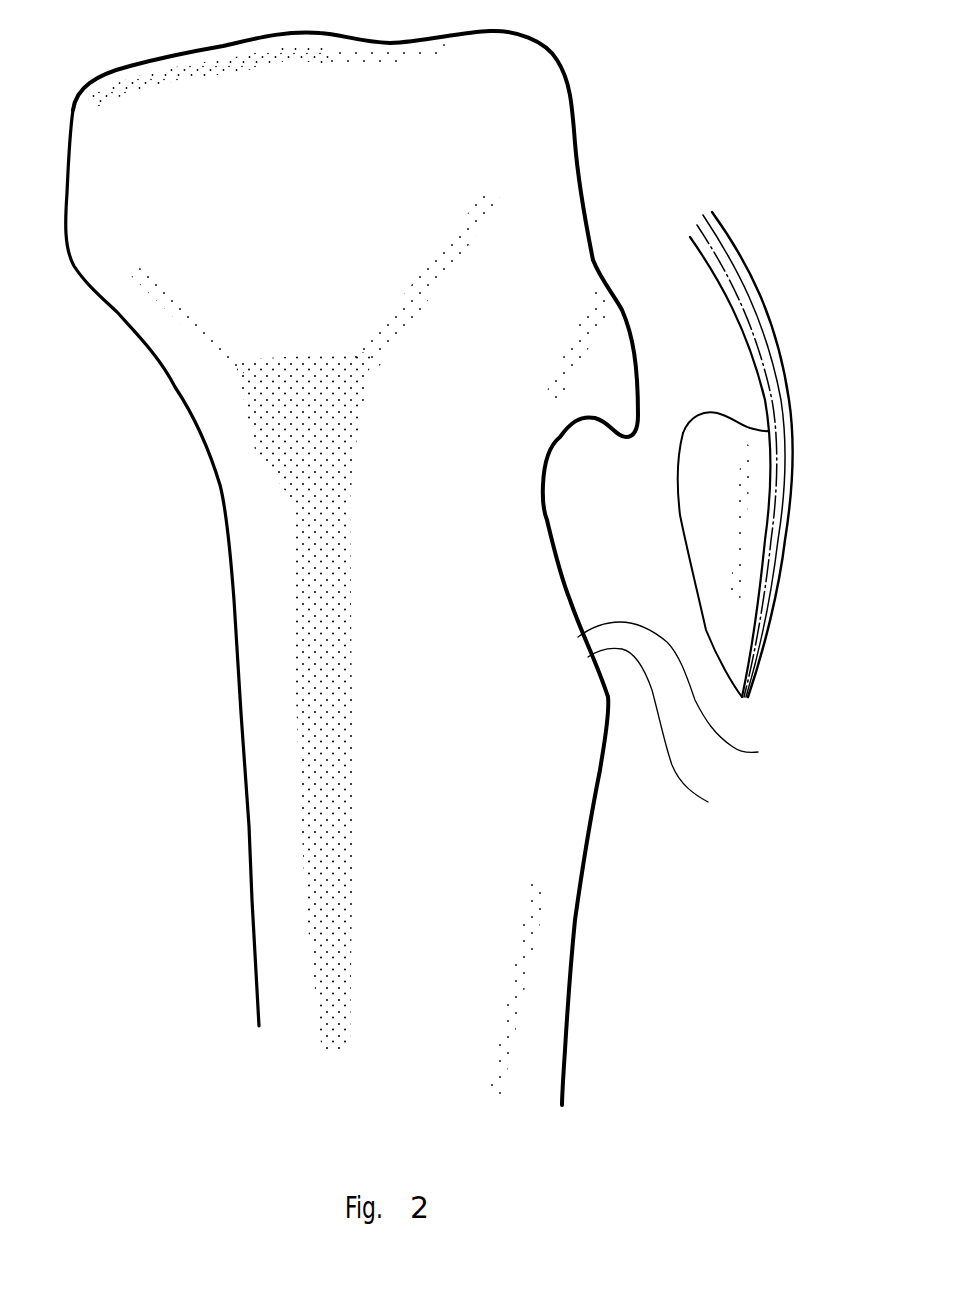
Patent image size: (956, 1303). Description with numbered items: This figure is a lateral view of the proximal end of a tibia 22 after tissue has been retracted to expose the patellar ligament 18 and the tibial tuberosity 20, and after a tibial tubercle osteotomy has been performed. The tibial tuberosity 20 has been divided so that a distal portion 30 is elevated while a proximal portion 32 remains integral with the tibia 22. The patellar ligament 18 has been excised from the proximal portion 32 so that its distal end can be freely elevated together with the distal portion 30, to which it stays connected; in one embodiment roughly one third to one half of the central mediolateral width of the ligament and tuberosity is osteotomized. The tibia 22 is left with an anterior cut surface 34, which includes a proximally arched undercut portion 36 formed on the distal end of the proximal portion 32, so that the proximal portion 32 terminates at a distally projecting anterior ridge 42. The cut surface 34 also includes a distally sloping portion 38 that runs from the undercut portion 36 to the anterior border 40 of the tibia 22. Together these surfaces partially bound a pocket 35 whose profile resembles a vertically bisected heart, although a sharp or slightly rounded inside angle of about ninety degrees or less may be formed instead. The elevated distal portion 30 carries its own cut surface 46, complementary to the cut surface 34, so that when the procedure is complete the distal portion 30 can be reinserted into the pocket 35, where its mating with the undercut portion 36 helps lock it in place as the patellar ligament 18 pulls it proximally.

The patellar ligament 18 is at (779, 357).
The tibial tuberosity 20 is at (728, 341).
The tibia 22 is at (530, 898).
The distal portion 30 is at (727, 423).
The proximal portion 32 is at (618, 372).
The anterior cut surface 34 is at (659, 732).
The pocket 35 is at (563, 455).
The undercut portion 36 is at (578, 420).
The distally sloping portion 38 is at (679, 692).
The anterior border 40 is at (577, 943).
The anterior ridge 42 is at (628, 424).
The cut surface 46 is at (692, 577).